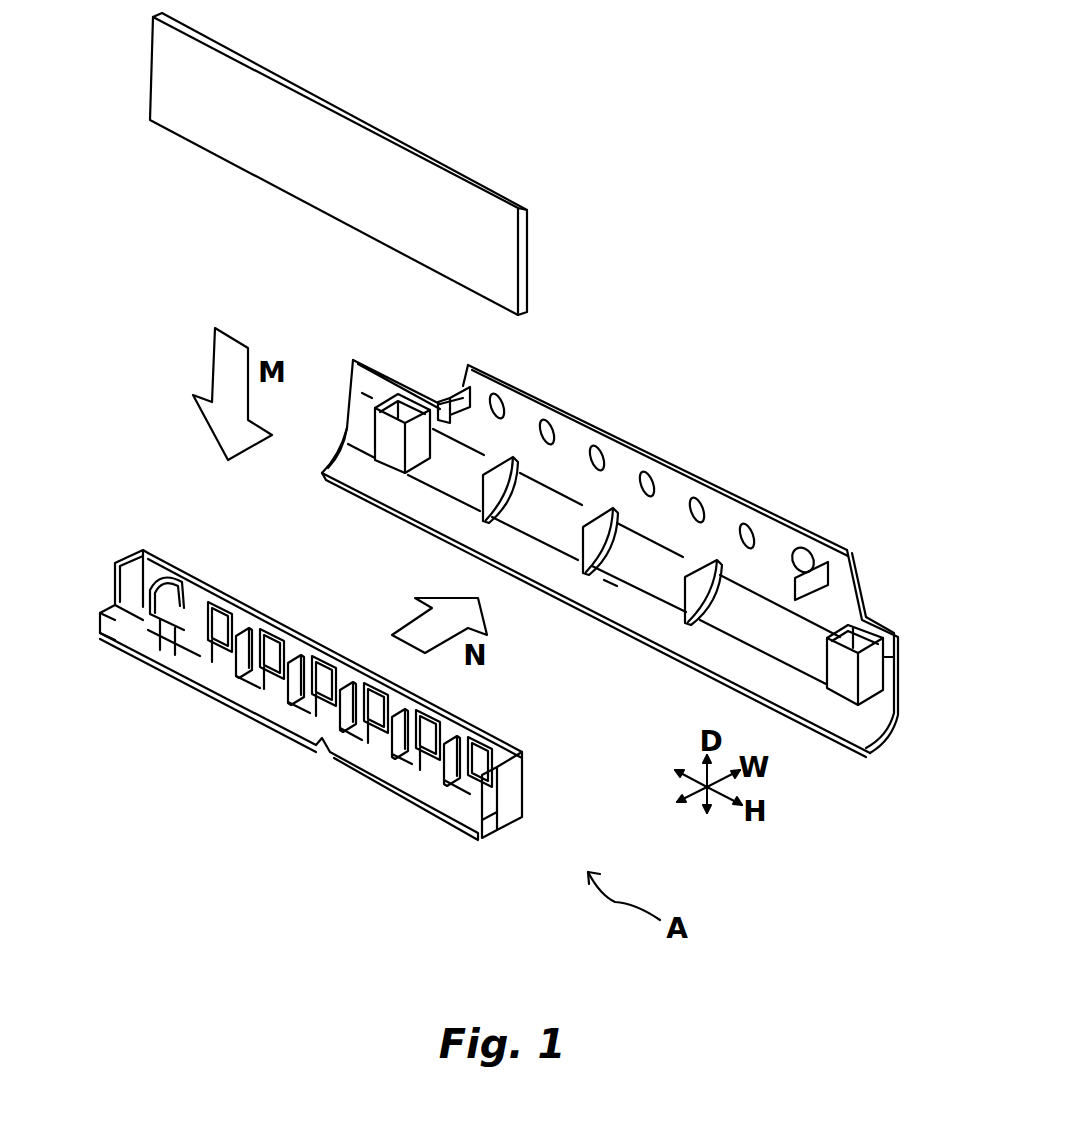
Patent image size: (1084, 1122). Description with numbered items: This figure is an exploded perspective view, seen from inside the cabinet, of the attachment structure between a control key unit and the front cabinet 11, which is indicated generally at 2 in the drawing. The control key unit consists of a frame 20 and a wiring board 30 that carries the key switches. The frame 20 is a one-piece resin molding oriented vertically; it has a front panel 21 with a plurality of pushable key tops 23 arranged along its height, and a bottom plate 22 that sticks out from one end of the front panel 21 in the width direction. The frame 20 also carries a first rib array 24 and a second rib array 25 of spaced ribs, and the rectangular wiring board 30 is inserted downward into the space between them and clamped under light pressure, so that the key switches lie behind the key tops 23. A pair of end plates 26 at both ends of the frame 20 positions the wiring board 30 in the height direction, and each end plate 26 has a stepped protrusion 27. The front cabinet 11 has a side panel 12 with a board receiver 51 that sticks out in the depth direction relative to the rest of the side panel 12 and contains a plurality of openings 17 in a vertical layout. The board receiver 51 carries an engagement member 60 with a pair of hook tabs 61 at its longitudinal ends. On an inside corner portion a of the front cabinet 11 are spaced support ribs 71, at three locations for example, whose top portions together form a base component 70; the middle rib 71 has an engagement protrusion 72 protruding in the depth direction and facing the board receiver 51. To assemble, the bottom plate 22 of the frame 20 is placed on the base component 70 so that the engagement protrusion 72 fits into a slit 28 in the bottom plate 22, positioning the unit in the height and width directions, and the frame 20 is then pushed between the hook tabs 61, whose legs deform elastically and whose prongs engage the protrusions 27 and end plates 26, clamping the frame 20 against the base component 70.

The wiring board 30 is at (392, 119).
The housing body 2 is at (633, 524).
The board receiver 51 is at (696, 471).
The front cabinet 11 is at (842, 757).
The side panel 12 is at (880, 623).
The openings 17 is at (644, 467).
The engagement member 60 is at (629, 549).
The hook tabs 61 is at (458, 382).
The base component 70 is at (573, 539).
The ribs 71 is at (483, 483).
The engagement protrusion 72 is at (588, 522).
The inside corner portion a is at (616, 562).
The frame 20 is at (328, 688).
The front panel 21 is at (478, 722).
The end plates 26 is at (110, 577).
The protrusion 27 is at (94, 614).
The slit 28 is at (330, 758).
The second rib array 25 is at (378, 783).
The key tops 23 is at (343, 700).
The first rib array 24 is at (456, 782).
The bottom plate 22 is at (423, 802).